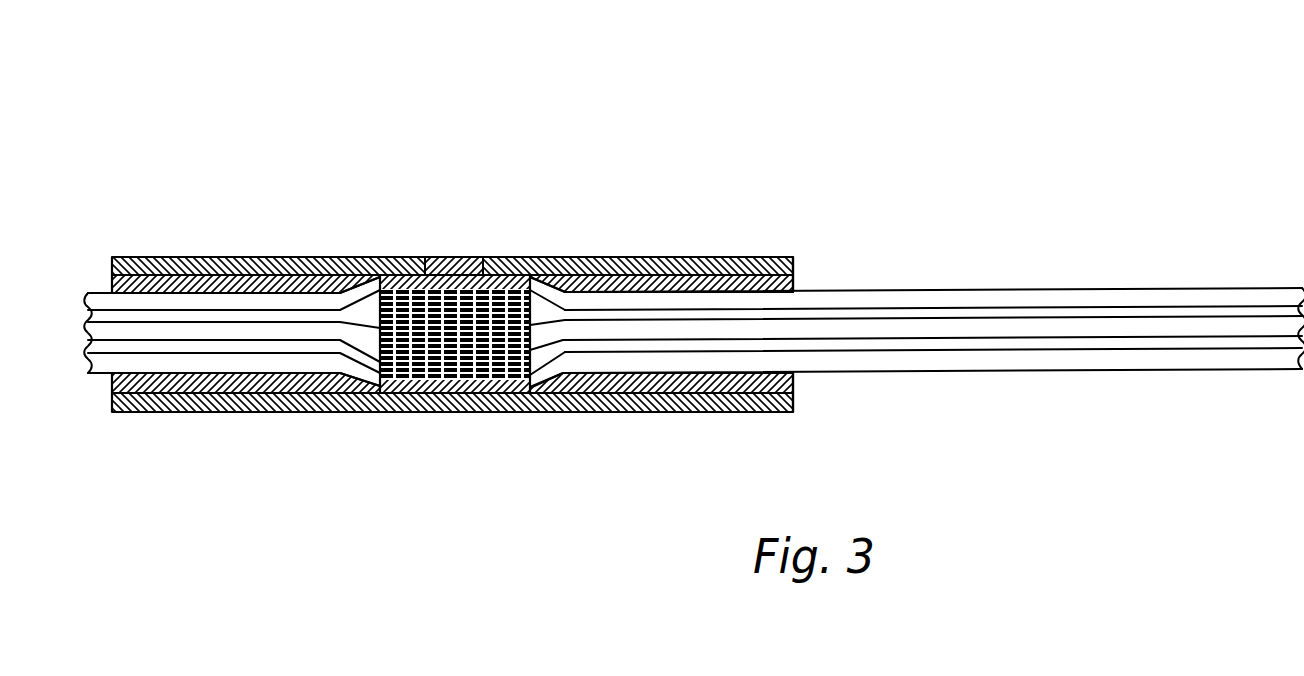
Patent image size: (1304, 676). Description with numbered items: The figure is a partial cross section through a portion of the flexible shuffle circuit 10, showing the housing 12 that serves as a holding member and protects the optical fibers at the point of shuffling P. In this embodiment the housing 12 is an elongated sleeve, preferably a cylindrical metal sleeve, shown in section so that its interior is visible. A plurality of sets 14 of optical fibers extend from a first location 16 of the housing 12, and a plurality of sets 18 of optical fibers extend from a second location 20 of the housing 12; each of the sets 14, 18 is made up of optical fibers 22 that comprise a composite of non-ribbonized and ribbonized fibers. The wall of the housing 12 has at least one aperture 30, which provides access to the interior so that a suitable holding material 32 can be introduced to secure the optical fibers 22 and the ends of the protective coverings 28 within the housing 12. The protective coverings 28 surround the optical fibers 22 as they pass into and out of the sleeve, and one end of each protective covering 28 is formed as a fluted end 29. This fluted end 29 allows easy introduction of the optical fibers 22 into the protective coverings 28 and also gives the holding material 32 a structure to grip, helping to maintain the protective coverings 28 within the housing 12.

The flexible shuffle circuit 10 is at (793, 113).
The housing 12 is at (655, 255).
The sets of optical fibers 14 is at (206, 321).
The first location 16 is at (77, 285).
The sets of optical fibers 18 is at (1192, 378).
The second location 20 is at (793, 380).
The optical fibers 22 is at (490, 370).
The protective coverings 28 is at (917, 382).
The fluted end 29 is at (540, 333).
The aperture 30 is at (453, 257).
The holding material 32 is at (208, 392).
The point of shuffling P is at (415, 423).